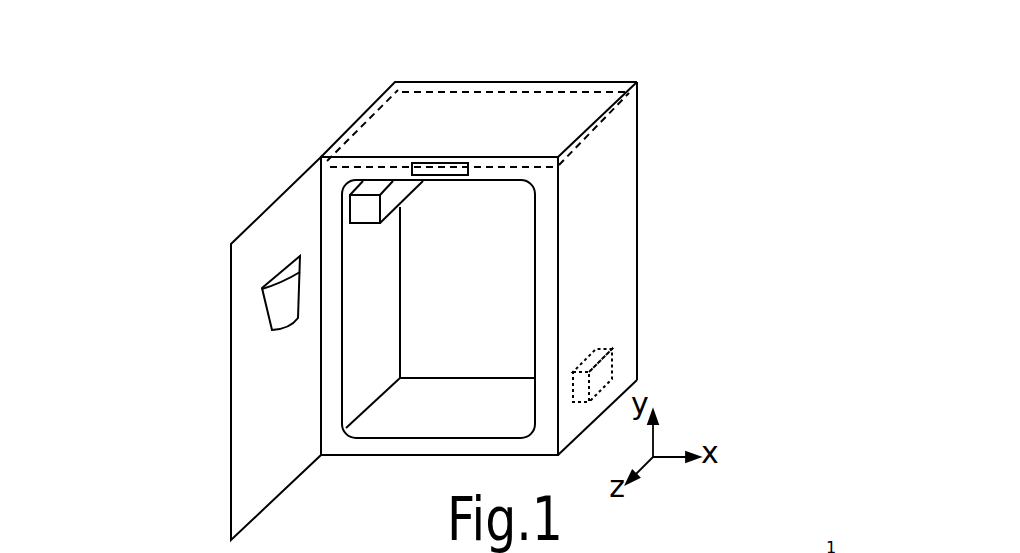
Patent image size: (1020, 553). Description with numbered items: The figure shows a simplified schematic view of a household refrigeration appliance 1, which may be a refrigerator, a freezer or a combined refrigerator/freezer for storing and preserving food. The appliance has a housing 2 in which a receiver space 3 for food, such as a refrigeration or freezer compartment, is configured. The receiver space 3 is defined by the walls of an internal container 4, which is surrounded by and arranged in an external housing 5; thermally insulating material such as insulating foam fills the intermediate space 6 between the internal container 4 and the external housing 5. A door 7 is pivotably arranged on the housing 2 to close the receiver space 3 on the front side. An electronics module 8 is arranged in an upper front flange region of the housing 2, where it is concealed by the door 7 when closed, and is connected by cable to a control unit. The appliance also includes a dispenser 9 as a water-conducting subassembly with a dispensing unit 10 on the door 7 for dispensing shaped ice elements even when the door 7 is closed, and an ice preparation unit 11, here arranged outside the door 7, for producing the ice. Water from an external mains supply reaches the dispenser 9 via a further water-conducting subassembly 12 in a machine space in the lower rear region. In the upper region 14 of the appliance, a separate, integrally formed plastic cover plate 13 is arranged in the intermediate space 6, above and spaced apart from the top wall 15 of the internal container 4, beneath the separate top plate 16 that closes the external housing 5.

The household refrigeration appliance 1 is at (659, 121).
The housing 2 is at (650, 239).
The receiver space 3 is at (513, 302).
The internal container 4 is at (535, 212).
The external housing 5 is at (617, 315).
The intermediate space 6 is at (551, 189).
The door 7 is at (251, 187).
The electronics module 8 is at (428, 163).
The dispenser 9 is at (267, 260).
The dispensing unit 10 is at (280, 343).
The ice preparation unit 11 is at (368, 183).
The further water-conducting subassembly 12 is at (602, 370).
The cover plate 13 is at (531, 124).
The upper region 14 is at (650, 70).
The top wall 15 is at (457, 183).
The top plate 16 is at (458, 108).